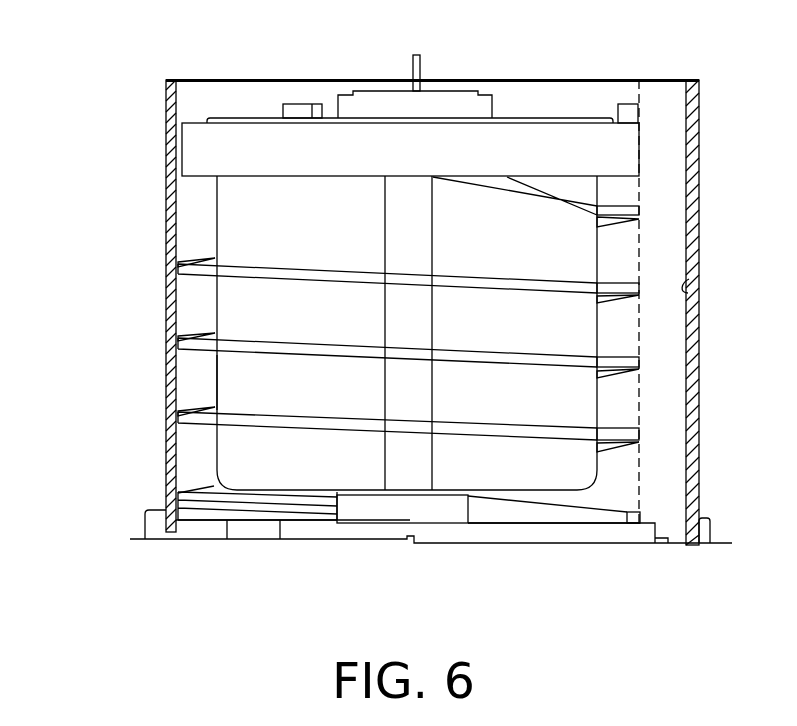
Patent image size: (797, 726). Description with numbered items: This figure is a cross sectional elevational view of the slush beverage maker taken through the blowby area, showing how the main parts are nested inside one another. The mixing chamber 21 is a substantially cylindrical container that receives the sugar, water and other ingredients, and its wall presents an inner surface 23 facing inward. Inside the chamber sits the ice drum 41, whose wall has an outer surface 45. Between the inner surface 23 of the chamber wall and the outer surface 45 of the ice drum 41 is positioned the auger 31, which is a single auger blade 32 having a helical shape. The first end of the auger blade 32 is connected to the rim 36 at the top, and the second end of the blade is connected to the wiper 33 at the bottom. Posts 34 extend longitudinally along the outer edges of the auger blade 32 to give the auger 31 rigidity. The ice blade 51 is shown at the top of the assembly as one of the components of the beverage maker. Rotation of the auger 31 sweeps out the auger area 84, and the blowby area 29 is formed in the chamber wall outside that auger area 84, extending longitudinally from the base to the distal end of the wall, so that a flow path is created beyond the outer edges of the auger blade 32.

The mixing chamber 21 is at (150, 85).
The inner surface 23 is at (690, 291).
The blowby area 29 is at (662, 243).
The auger 31 is at (238, 332).
The auger blade 32 is at (640, 366).
The wiper 33 is at (617, 508).
The posts 34 is at (433, 330).
The rim 36 is at (640, 157).
The ice drum 41 is at (203, 204).
The outer surface 45 is at (215, 388).
The ice blade 51 is at (436, 61).
The auger area 84 is at (627, 421).